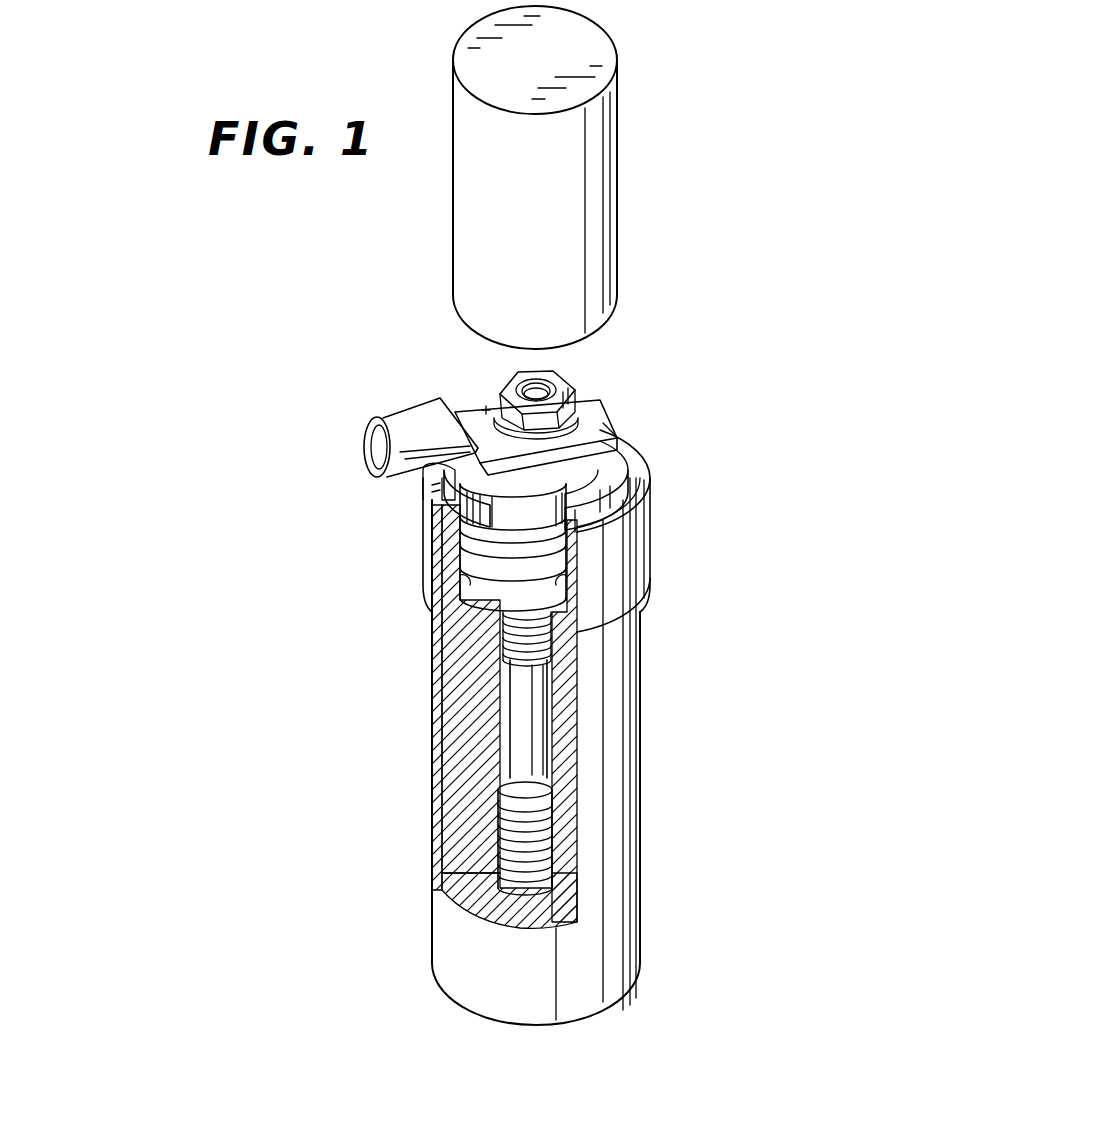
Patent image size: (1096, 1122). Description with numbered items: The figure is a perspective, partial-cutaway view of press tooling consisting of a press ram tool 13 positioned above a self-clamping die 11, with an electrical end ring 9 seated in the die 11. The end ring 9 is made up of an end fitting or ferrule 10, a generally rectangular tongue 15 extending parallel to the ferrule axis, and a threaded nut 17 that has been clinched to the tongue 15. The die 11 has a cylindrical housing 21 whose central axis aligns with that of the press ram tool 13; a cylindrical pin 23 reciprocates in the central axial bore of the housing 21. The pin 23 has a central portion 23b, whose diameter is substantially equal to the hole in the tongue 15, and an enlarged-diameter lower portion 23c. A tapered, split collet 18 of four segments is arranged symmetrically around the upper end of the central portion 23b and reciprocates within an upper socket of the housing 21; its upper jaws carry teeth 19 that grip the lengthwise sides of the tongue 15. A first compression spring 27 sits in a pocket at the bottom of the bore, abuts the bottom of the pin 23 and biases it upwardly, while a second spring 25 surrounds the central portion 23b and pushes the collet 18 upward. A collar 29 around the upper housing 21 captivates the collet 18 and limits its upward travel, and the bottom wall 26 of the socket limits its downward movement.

The electrical end ring 9 is at (400, 438).
The ferrule 10 is at (397, 418).
The self-clamping die 11 is at (295, 763).
The press ram tool 13 is at (593, 155).
The tongue 15 is at (490, 408).
The threaded nut 17 is at (555, 368).
The collet 18 is at (500, 582).
The teeth 19 is at (603, 461).
The cylindrical housing 21 is at (617, 757).
The pin 23 is at (520, 712).
The central portion 23b is at (508, 748).
The enlarged-diameter lower portion 23c is at (500, 795).
The second spring 25 is at (512, 680).
The bottom wall 26 is at (505, 636).
The first compression spring 27 is at (500, 858).
The collar 29 is at (637, 533).